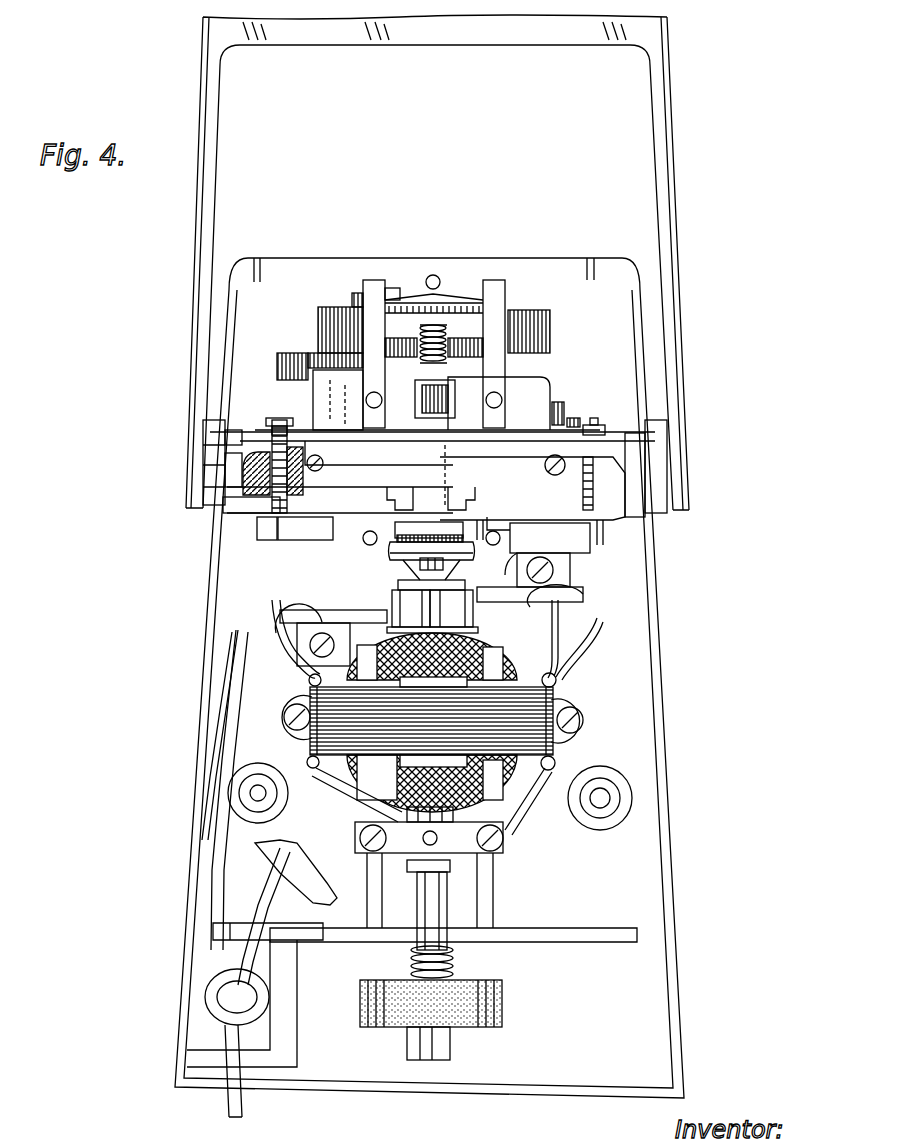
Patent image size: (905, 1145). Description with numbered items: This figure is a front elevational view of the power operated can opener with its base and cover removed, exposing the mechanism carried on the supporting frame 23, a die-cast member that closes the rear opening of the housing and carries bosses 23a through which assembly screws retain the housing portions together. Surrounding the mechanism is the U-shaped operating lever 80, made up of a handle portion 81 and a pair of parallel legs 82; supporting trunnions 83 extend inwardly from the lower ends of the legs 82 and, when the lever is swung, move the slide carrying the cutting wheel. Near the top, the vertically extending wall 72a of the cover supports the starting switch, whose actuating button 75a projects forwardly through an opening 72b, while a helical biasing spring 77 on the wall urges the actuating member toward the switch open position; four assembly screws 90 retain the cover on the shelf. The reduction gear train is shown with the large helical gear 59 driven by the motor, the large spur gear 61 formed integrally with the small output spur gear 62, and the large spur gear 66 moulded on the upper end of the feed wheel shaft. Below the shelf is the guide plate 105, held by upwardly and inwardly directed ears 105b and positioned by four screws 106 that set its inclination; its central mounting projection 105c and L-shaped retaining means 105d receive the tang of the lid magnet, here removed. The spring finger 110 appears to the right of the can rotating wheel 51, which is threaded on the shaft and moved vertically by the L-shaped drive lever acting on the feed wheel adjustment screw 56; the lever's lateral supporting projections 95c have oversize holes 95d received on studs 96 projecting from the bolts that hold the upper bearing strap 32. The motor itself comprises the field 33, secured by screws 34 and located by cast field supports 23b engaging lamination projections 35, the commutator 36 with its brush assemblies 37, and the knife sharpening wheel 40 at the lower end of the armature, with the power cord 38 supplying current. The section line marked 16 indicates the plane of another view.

The operating lever 80 is at (668, 158).
The handle portion 81 is at (463, 46).
The legs 82 is at (212, 176).
The supporting frame 23 is at (283, 268).
The helical biasing spring 77 is at (447, 330).
The small output spur gear 62 is at (352, 305).
The large spur gear 61 is at (293, 352).
The large spur gear 66 is at (540, 325).
The vertically extending wall 72a is at (317, 377).
The opening 72b is at (420, 402).
The actuating button 75a is at (455, 400).
The large helical gear 59 is at (565, 403).
The assembly screws 90 is at (287, 432).
The central mounting projection 105c is at (457, 448).
The guide plate 105 is at (617, 510).
The L-shaped retaining means 105d is at (393, 490).
The supporting trunnions 83 is at (205, 458).
The ears 105b is at (258, 455).
The screws 106 is at (600, 432).
The supporting projections 95c is at (370, 520).
The spring finger 110 is at (507, 517).
The studs 96 is at (500, 538).
The oversize holes 95d is at (365, 545).
The resilient straps 32 is at (392, 555).
The can rotating wheel 51 is at (450, 560).
The commutator 36 is at (428, 603).
The feed wheel adjustment screw 56 is at (432, 611).
The field 33 is at (557, 690).
The screws 34 is at (553, 705).
The lamination projections 35 is at (305, 683).
The field supports 23b is at (556, 675).
The brush assemblies 37 is at (318, 609).
The bosses 23a is at (262, 797).
The knife sharpening wheel 40 is at (505, 1002).
The power cord 38 is at (215, 983).
The section line 16 is at (135, 516).